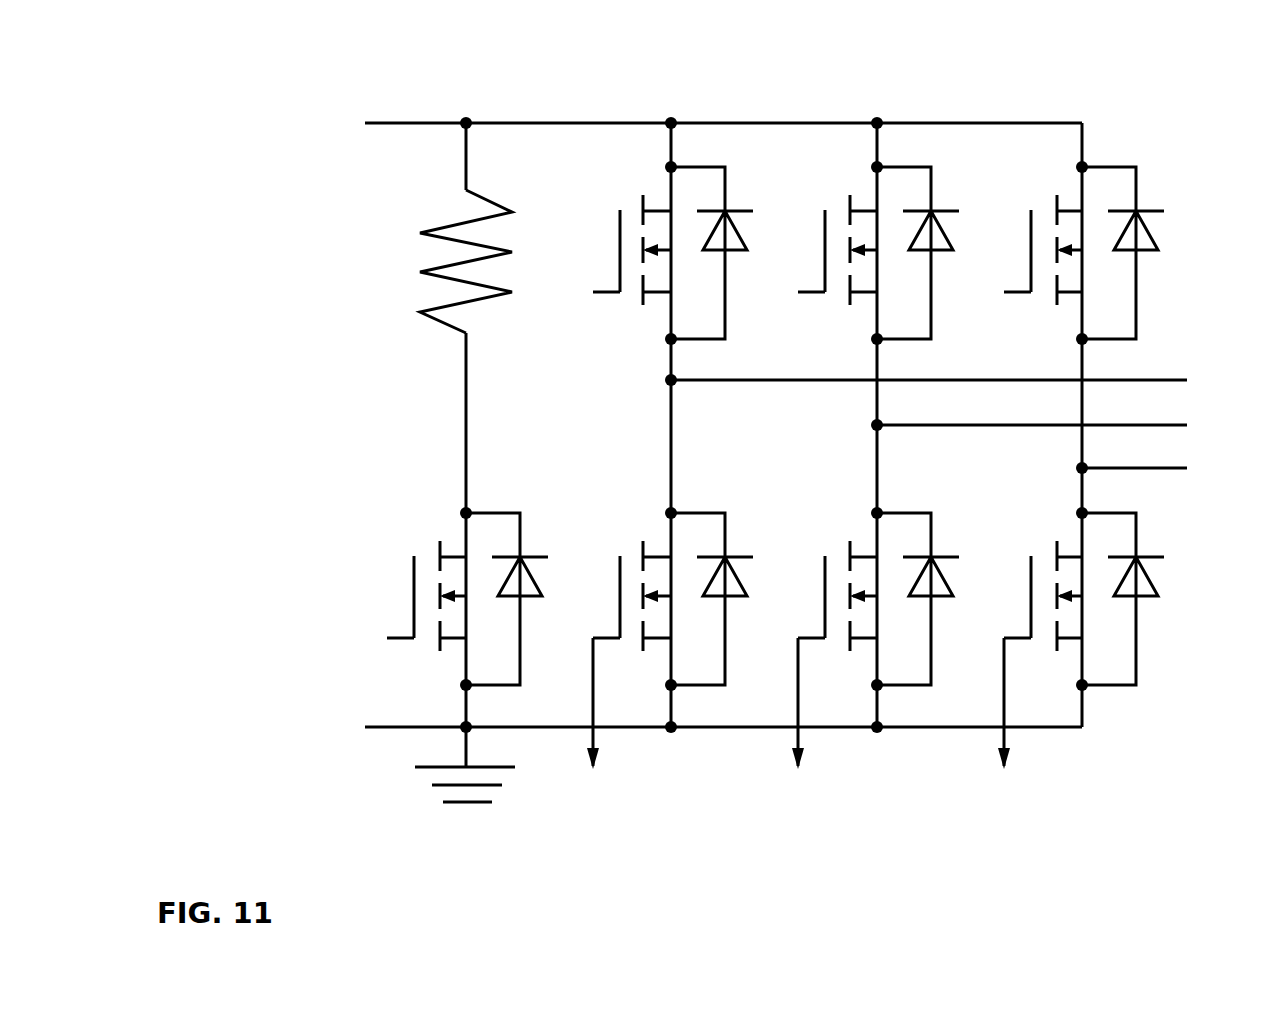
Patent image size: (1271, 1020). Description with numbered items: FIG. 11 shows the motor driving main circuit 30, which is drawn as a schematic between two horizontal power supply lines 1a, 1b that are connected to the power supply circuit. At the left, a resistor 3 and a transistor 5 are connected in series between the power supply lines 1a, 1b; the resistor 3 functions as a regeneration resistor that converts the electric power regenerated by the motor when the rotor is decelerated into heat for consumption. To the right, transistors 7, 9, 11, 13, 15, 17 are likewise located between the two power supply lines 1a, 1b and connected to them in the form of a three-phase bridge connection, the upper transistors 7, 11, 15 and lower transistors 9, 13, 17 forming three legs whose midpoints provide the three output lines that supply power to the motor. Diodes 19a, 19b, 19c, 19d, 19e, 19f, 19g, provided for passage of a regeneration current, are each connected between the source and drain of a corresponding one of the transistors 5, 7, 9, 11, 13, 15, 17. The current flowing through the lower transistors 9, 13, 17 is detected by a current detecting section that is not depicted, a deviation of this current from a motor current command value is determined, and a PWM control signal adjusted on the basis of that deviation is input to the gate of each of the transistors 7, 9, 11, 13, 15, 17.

The motor driving main circuit 30 is at (793, 43).
The power supply line 1a is at (385, 123).
The power supply line 1b is at (386, 727).
The resistor 3 is at (422, 258).
The transistor 5 is at (413, 583).
The transistor 7 is at (619, 236).
The transistor 9 is at (619, 583).
The transistor 11 is at (824, 236).
The transistor 13 is at (824, 583).
The transistor 15 is at (1030, 236).
The transistor 17 is at (1030, 583).
The diode 19a is at (538, 601).
The diode 19b is at (743, 255).
The diode 19c is at (743, 601).
The diode 19d is at (949, 255).
The diode 19e is at (949, 601).
The diode 19f is at (1154, 255).
The diode 19g is at (1154, 601).